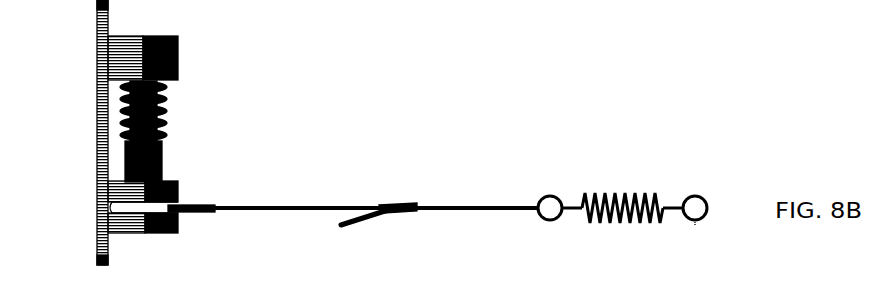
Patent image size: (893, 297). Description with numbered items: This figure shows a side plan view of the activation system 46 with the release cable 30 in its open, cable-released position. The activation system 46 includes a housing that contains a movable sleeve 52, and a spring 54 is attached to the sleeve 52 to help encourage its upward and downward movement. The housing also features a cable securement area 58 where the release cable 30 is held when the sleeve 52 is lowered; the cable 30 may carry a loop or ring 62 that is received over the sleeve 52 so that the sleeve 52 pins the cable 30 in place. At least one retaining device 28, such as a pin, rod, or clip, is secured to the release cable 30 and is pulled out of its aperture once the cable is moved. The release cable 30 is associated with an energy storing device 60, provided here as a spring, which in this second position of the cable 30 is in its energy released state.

The activation system 46 is at (72, 121).
The spring 54 is at (163, 110).
The movable sleeve 52 is at (162, 163).
The cable securement area 58 is at (123, 204).
The loop or ring 62 is at (198, 212).
The release cable 30 is at (272, 206).
The retaining device 28 is at (358, 227).
The energy storing device 60 is at (622, 190).